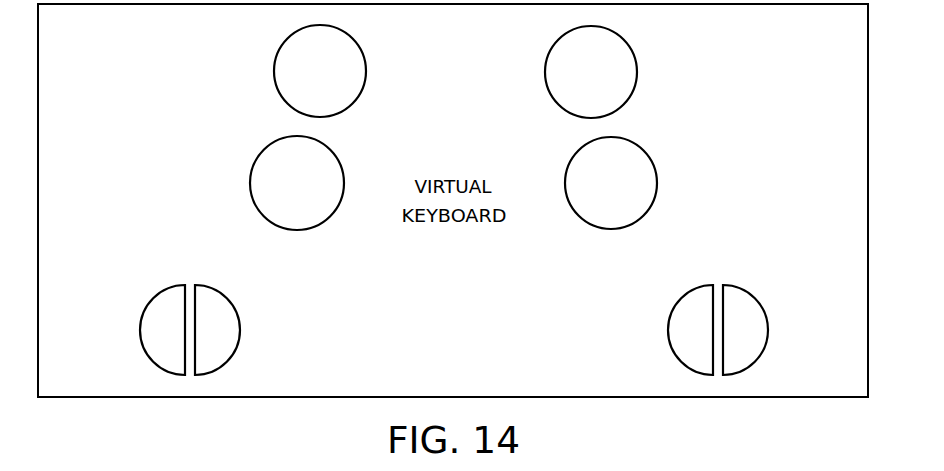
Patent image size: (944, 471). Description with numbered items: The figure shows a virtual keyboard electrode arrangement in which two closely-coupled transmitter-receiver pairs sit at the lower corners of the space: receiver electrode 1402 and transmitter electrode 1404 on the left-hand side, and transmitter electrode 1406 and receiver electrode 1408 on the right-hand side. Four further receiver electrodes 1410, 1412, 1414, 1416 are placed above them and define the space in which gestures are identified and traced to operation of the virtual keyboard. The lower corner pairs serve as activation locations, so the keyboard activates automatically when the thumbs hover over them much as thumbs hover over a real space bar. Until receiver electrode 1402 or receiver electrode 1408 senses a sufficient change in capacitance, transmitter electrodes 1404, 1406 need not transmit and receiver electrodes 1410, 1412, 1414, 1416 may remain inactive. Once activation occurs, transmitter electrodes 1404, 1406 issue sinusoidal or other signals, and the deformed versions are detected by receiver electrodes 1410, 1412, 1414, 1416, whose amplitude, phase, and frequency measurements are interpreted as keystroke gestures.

The receiver electrode 1402 is at (139, 330).
The transmitter electrode 1404 is at (241, 330).
The transmitter electrode 1406 is at (667, 330).
The receiver electrode 1408 is at (769, 330).
The receiver electrode 1410 is at (251, 183).
The receiver electrode 1412 is at (274, 71).
The receiver electrode 1414 is at (637, 72).
The receiver electrode 1416 is at (658, 183).